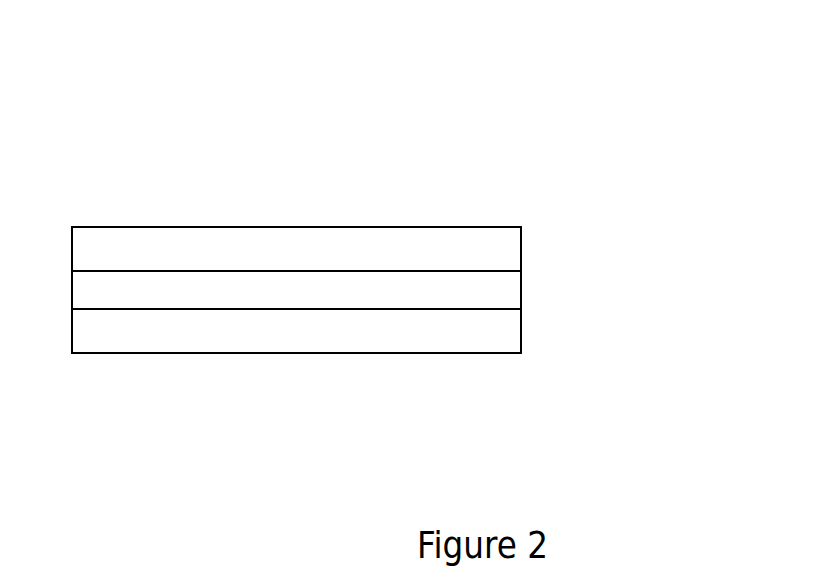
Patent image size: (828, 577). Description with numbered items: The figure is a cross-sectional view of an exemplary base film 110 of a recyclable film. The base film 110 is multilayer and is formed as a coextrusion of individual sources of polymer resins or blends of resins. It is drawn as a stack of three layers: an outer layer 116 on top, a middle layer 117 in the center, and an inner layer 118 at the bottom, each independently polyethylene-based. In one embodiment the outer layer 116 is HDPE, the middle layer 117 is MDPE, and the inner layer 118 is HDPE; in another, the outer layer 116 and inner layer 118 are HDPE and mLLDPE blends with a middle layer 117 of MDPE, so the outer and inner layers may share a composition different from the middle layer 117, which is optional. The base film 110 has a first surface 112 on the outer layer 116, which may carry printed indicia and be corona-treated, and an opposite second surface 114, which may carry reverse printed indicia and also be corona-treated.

The base film 110 is at (564, 159).
The first surface 112 is at (219, 213).
The second surface 114 is at (258, 364).
The outer layer 116 is at (520, 251).
The middle layer 117 is at (519, 297).
The inner layer 118 is at (517, 341).